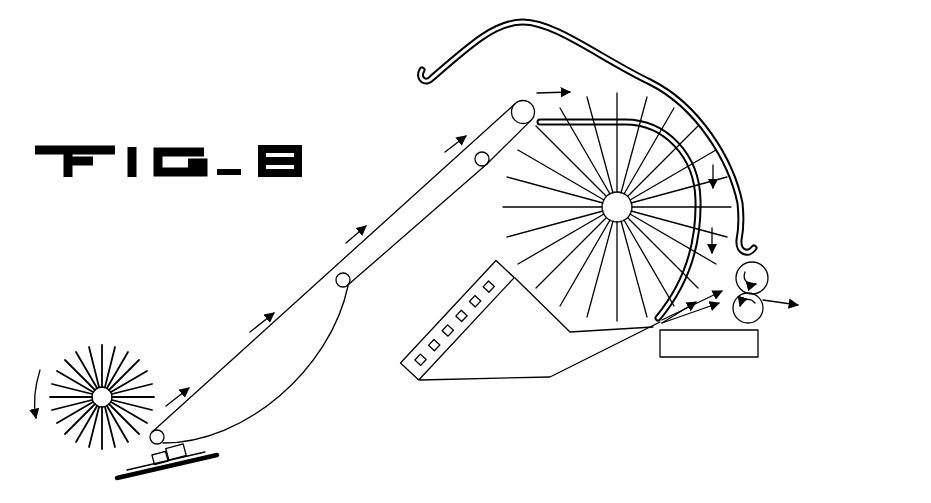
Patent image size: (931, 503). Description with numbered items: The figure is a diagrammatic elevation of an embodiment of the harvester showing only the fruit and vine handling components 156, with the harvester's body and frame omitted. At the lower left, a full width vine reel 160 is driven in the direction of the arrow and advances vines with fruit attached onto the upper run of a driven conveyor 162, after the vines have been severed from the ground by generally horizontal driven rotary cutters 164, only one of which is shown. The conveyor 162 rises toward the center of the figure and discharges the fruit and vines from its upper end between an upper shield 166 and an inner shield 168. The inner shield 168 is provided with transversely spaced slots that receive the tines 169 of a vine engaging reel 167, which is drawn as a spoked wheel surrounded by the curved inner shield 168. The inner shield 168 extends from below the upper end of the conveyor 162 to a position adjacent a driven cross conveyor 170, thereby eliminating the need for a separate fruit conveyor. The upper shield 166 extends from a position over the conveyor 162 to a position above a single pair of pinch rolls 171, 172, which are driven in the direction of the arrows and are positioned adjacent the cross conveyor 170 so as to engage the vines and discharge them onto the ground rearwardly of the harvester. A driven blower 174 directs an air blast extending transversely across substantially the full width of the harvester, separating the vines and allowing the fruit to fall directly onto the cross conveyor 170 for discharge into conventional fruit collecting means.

The fruit and vine handling components 156 is at (472, 30).
The vine reel 160 is at (113, 355).
The conveyor 162 is at (336, 268).
The rotary cutter 164 is at (210, 457).
The upper shield 166 is at (563, 31).
The vine engaging reel 167 is at (624, 92).
The inner shield 168 is at (736, 149).
The tines 169 is at (513, 180).
The cross conveyor 170 is at (672, 358).
The pinch roll 171 is at (766, 264).
The pinch roll 172 is at (760, 322).
The blower 174 is at (399, 358).